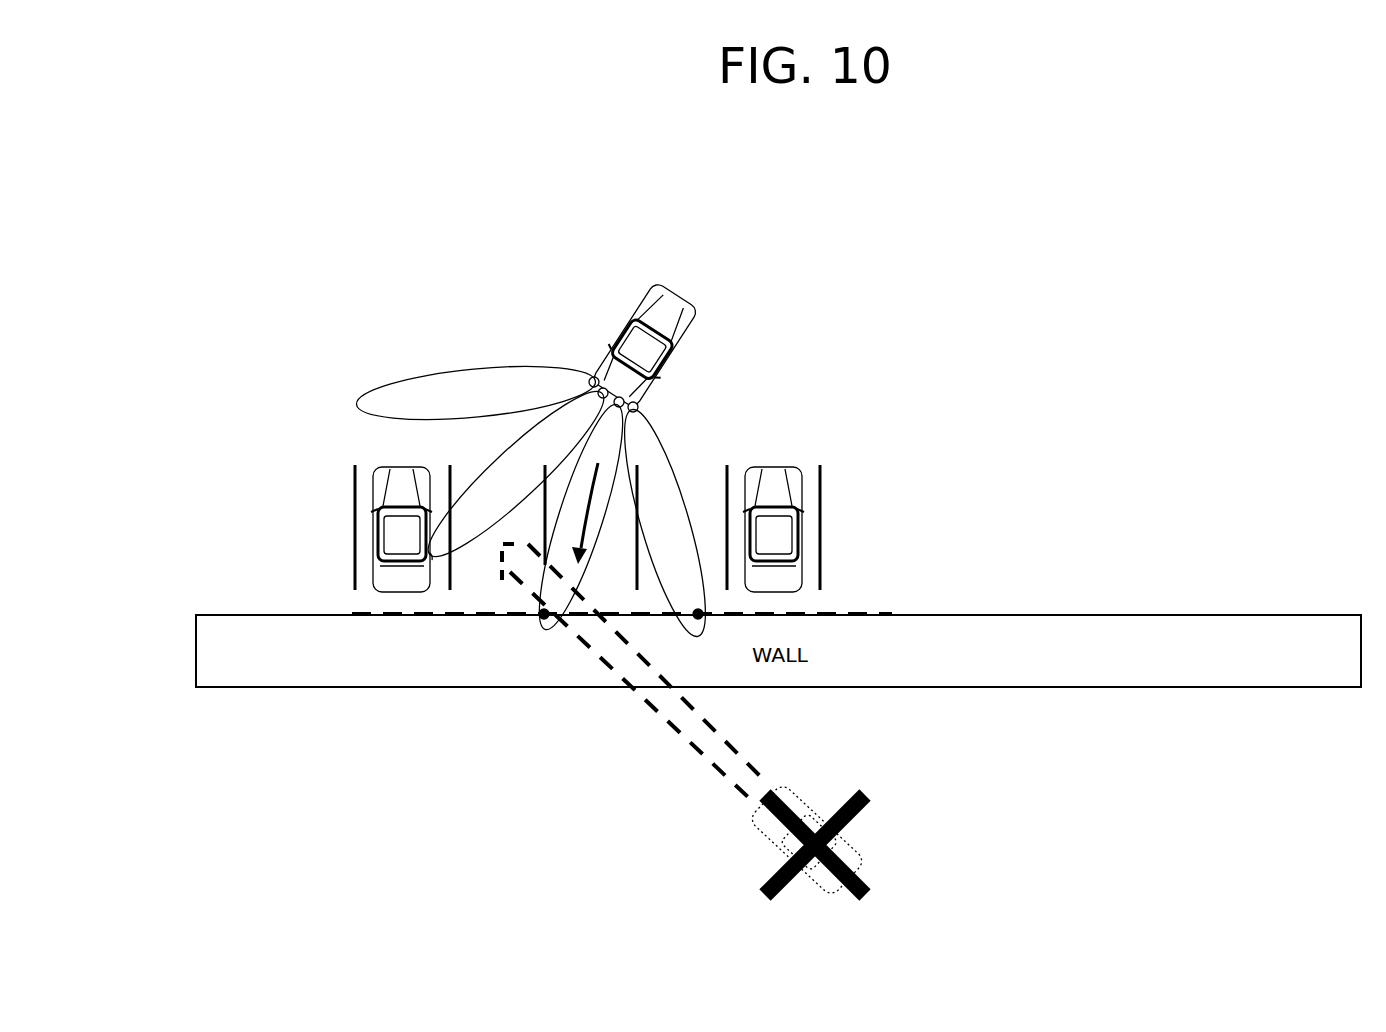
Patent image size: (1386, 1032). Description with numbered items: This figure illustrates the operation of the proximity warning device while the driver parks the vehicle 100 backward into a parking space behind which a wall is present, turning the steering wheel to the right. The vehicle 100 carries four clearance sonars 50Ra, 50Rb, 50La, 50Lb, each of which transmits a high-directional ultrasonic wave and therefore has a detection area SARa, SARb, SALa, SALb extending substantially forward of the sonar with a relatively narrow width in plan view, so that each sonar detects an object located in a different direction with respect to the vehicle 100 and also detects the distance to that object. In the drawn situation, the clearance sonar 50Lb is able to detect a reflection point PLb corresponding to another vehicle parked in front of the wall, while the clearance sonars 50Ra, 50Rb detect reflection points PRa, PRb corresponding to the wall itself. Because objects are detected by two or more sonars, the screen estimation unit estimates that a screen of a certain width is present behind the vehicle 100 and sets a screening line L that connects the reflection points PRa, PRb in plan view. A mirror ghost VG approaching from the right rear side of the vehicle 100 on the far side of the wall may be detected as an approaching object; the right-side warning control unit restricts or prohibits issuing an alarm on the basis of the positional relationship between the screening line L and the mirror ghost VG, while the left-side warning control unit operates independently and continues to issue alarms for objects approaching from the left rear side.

The vehicle 100 is at (677, 291).
The clearance sonar 50La is at (590, 378).
The clearance sonar 50Lb is at (602, 388).
The clearance sonar 50Rb is at (624, 401).
The clearance sonar 50Ra is at (638, 410).
The detection area SALa is at (383, 385).
The detection area SALb is at (472, 477).
The detection area SARb is at (538, 626).
The detection area SARa is at (710, 611).
The reflection point PLb is at (432, 560).
The reflection point PRb is at (543, 612).
The reflection point PRa is at (697, 613).
The screening line L is at (866, 611).
The mirror ghost VG is at (866, 858).